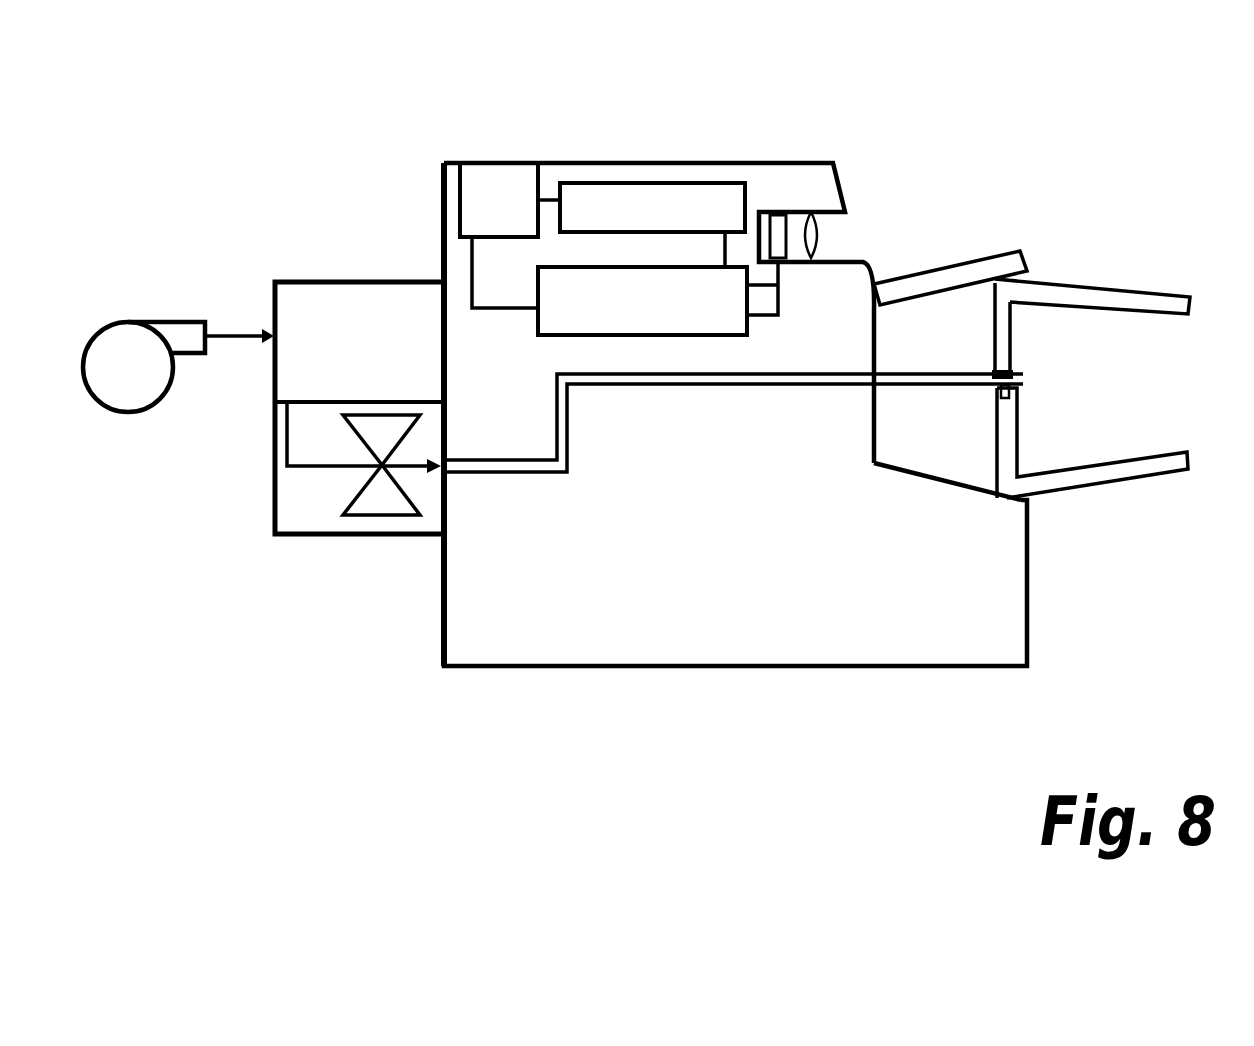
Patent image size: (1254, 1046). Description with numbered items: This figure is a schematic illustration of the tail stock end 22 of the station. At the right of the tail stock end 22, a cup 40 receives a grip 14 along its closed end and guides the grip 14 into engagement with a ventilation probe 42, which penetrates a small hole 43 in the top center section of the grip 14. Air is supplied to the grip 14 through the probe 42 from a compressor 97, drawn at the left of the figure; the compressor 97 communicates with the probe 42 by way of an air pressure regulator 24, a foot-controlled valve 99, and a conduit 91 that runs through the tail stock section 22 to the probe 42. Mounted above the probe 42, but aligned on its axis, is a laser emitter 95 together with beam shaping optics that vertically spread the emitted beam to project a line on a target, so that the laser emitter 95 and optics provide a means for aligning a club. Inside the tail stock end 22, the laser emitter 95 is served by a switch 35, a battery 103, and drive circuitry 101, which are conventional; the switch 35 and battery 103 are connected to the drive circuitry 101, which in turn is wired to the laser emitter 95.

The grip 14 is at (1093, 283).
The tail stock end 22 is at (867, 670).
The air pressure regulator 24 is at (332, 280).
The switch 35 is at (490, 188).
The cup 40 is at (965, 449).
The ventilation probe 42 is at (1027, 375).
The small hole 43 is at (1027, 387).
The conduit 91 is at (699, 388).
The laser emitter 95 is at (788, 212).
The compressor 97 is at (128, 414).
The foot-controlled valve 99 is at (362, 513).
The drive circuitry 101 is at (557, 337).
The battery 103 is at (663, 183).